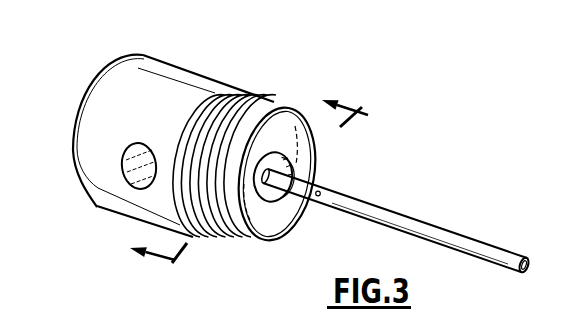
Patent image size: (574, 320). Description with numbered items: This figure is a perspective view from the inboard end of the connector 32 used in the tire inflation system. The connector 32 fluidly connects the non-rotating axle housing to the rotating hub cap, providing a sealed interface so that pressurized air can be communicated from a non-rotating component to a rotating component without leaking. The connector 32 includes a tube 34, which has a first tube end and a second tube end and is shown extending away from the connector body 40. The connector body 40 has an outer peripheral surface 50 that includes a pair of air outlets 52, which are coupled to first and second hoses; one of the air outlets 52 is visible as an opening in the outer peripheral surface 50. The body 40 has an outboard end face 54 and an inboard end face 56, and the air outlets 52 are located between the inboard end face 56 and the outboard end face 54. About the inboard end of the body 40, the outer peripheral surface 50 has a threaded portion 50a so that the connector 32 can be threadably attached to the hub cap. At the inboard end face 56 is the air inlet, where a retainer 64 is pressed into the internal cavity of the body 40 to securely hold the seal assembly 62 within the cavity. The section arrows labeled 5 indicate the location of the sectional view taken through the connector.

The connector 32 is at (413, 112).
The tube 34 is at (443, 228).
The connector body 40 is at (115, 182).
The outer peripheral surface 50 is at (203, 78).
The threaded portion 50a is at (275, 102).
The air outlets 52 is at (123, 171).
The outboard end face 54 is at (83, 102).
The inboard end face 56 is at (247, 240).
The seal assembly 62 is at (267, 197).
The retainer 64 is at (287, 208).
The section line 5- 5 is at (240, 172).